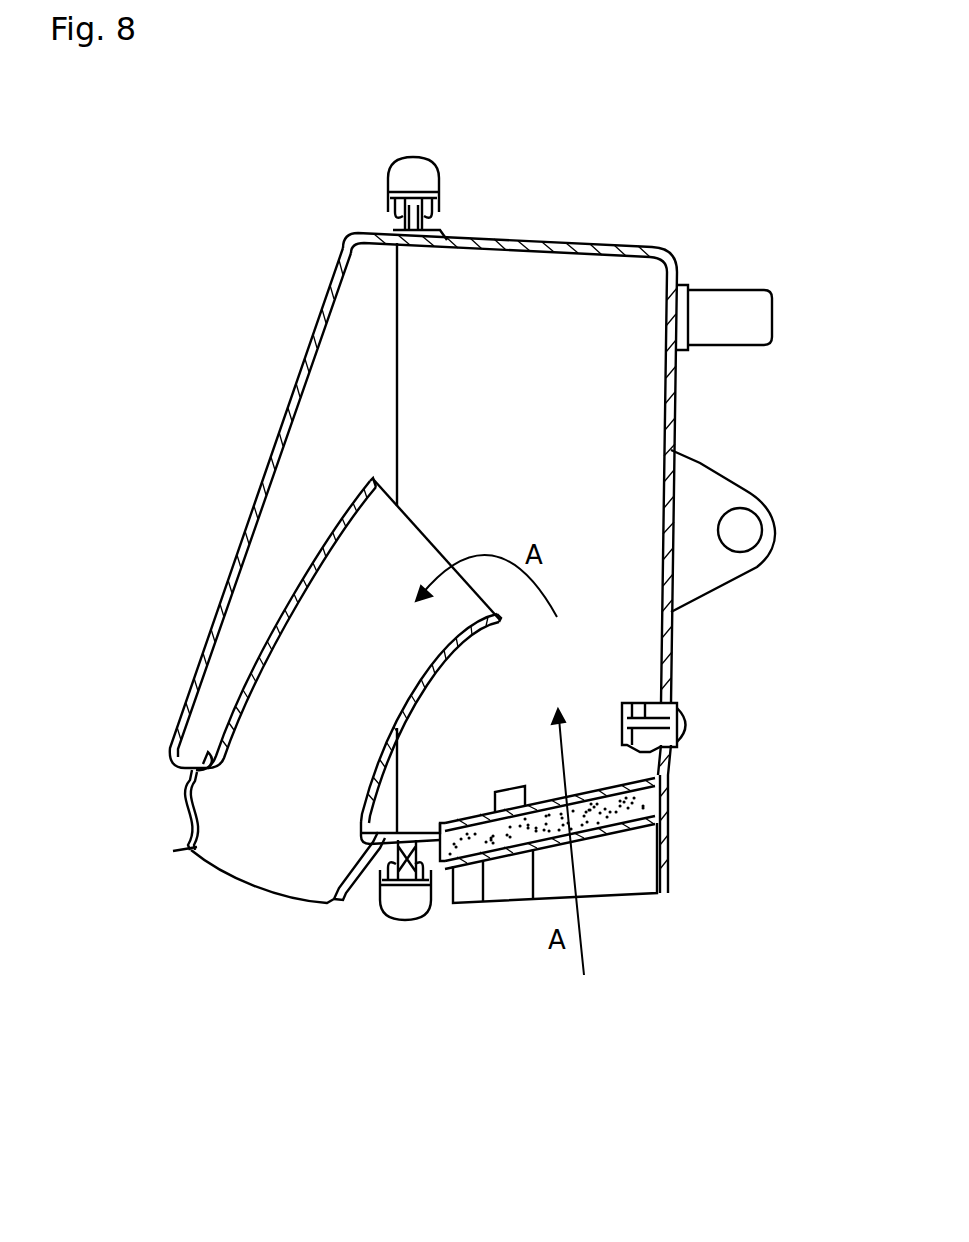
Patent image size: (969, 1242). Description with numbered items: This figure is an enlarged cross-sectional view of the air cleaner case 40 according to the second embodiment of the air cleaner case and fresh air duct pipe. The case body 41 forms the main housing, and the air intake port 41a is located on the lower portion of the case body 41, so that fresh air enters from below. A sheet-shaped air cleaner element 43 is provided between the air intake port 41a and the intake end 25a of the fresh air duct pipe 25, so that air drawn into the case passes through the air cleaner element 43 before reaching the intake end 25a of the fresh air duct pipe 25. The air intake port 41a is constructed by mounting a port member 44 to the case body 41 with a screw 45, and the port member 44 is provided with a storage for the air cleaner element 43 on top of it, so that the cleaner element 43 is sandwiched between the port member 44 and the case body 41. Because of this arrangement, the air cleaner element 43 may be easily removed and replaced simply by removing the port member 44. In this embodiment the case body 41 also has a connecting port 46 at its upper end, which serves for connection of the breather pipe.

The air cleaner case 40 is at (656, 241).
The case body 41 is at (678, 417).
The air intake port 41a is at (612, 873).
The air cleaner element 43 is at (630, 805).
The port member 44 is at (667, 873).
The screw 45 is at (690, 717).
The connecting port 46 is at (738, 300).
The fresh air duct pipe 25 is at (179, 833).
The intake end 25a is at (403, 540).